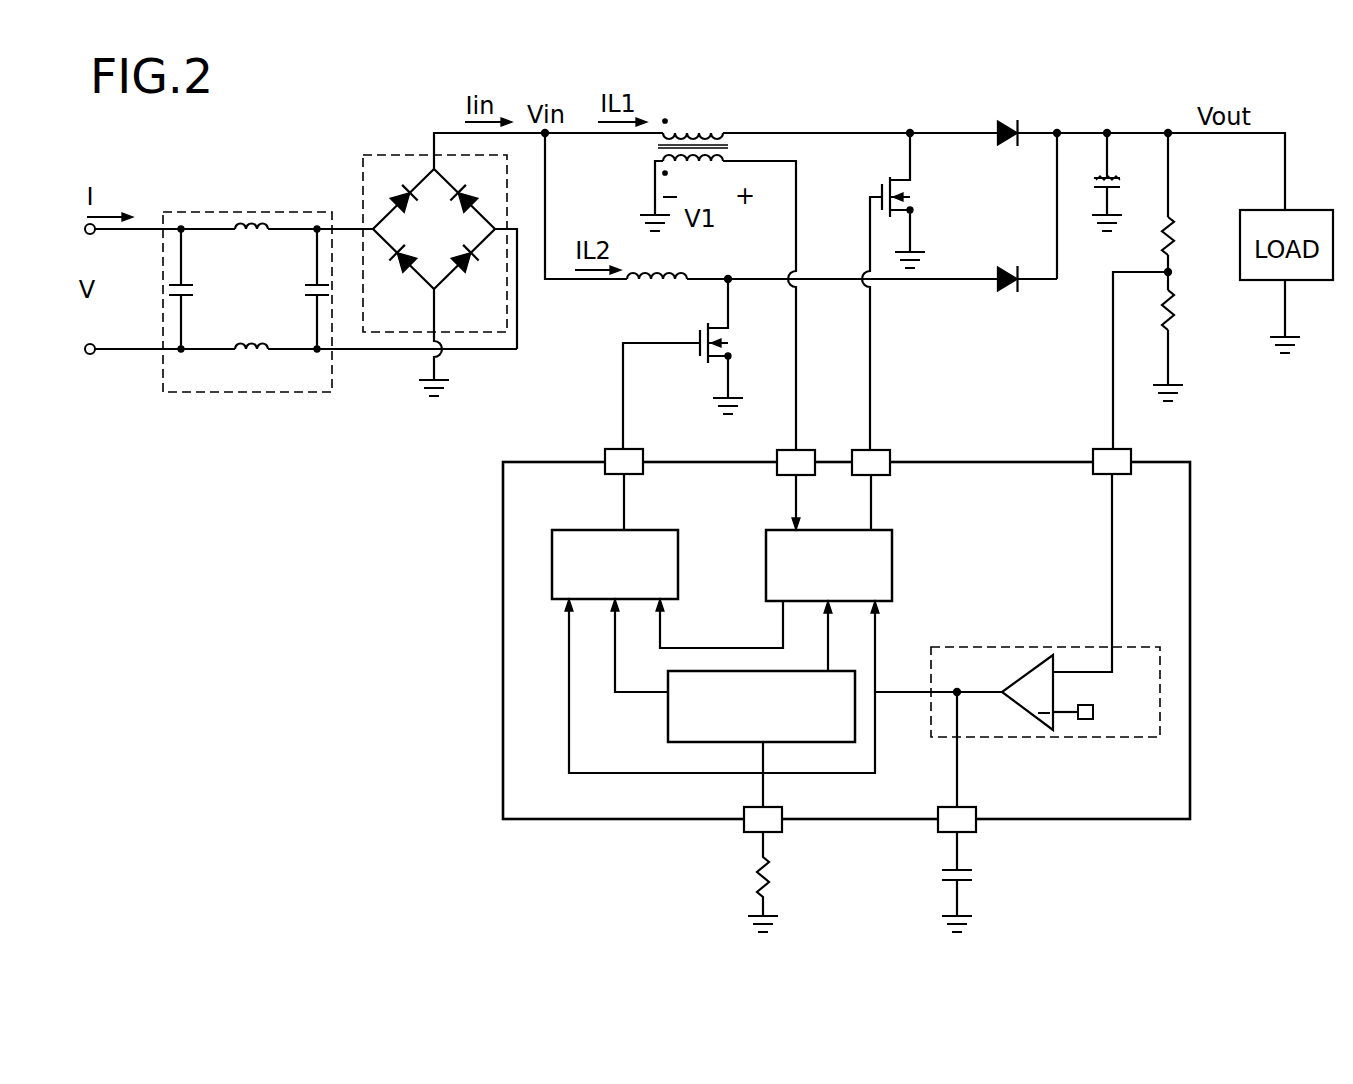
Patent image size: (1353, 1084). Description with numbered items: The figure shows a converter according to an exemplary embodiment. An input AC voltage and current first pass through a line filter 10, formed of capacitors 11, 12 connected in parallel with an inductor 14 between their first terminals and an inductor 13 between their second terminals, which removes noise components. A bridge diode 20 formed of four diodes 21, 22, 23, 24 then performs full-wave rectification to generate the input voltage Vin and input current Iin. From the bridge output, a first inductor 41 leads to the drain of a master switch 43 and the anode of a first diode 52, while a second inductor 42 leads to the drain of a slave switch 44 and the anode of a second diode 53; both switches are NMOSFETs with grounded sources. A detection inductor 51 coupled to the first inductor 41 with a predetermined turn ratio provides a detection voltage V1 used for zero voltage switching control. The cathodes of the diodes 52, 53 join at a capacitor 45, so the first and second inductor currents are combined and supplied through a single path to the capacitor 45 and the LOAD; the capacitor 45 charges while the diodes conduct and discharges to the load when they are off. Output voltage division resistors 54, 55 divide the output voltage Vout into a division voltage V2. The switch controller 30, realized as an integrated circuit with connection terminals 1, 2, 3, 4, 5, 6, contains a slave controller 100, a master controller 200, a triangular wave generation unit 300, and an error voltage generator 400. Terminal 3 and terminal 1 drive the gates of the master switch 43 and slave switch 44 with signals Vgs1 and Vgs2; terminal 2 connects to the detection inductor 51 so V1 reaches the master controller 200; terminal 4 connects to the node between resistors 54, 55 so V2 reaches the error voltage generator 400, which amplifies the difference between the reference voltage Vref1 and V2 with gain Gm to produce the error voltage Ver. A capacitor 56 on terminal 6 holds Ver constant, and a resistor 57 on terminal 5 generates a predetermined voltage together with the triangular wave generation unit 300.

The line filter 10 is at (247, 276).
The capacitor 11 is at (196, 289).
The capacitor 12 is at (304, 289).
The inductor 13 is at (251, 366).
The inductor 14 is at (251, 206).
The bridge diode 20 is at (513, 248).
The diode 21 is at (393, 190).
The diode 22 is at (475, 190).
The diode 23 is at (393, 272).
The diode 24 is at (476, 272).
The switch controller 30 is at (1191, 528).
The first inductor 41 is at (693, 123).
The second inductor 42 is at (657, 295).
The master switch 43 is at (914, 200).
The slave switch 44 is at (732, 346).
The capacitor 45 is at (1119, 182).
The detection inductor 51 is at (718, 302).
The first diode 52 is at (1009, 118).
The second diode 53 is at (1009, 264).
The output voltage division resistor 54 is at (1184, 236).
The output voltage division resistor 55 is at (1184, 310).
The capacitor 56 is at (972, 882).
The resistor 57 is at (774, 882).
The slave controller 100 is at (583, 528).
The master controller 200 is at (893, 557).
The triangular wave generation unit 300 is at (706, 744).
The error voltage generator 400 is at (1141, 647).
The connection terminal 1 is at (630, 449).
The connection terminal 2 is at (801, 450).
The connection terminal 3 is at (878, 450).
The connection terminal 4 is at (1100, 449).
The connection terminal 5 is at (752, 833).
The connection terminal 6 is at (945, 833).